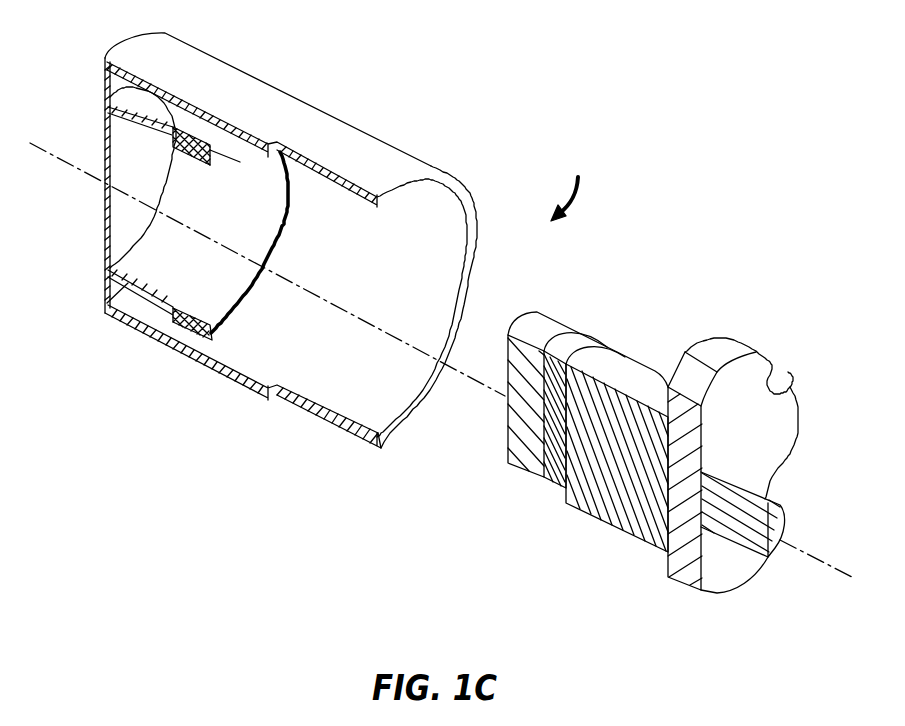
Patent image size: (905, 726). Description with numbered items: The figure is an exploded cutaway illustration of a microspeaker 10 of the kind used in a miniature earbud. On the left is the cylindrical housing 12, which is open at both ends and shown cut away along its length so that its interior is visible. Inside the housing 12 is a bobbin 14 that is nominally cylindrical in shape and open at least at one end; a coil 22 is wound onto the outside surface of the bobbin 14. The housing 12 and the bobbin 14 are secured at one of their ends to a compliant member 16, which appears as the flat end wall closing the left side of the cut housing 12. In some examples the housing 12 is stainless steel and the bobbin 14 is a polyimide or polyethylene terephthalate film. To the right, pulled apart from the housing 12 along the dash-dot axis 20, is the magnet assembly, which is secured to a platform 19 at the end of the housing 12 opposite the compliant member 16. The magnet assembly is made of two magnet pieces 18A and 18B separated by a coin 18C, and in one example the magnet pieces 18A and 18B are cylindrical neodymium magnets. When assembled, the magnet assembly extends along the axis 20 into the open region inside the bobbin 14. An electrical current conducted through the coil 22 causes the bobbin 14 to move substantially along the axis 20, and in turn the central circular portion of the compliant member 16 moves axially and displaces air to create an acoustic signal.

The microspeaker 10 is at (567, 179).
The cylindrical housing 12 is at (390, 163).
The bobbin 14 is at (155, 113).
The compliant member 16 is at (102, 243).
The magnet piece 18A is at (612, 508).
The magnet piece 18B is at (513, 466).
The coin 18C is at (550, 488).
The platform 19 is at (672, 578).
The axis 20 is at (50, 156).
The coil 22 is at (197, 130).